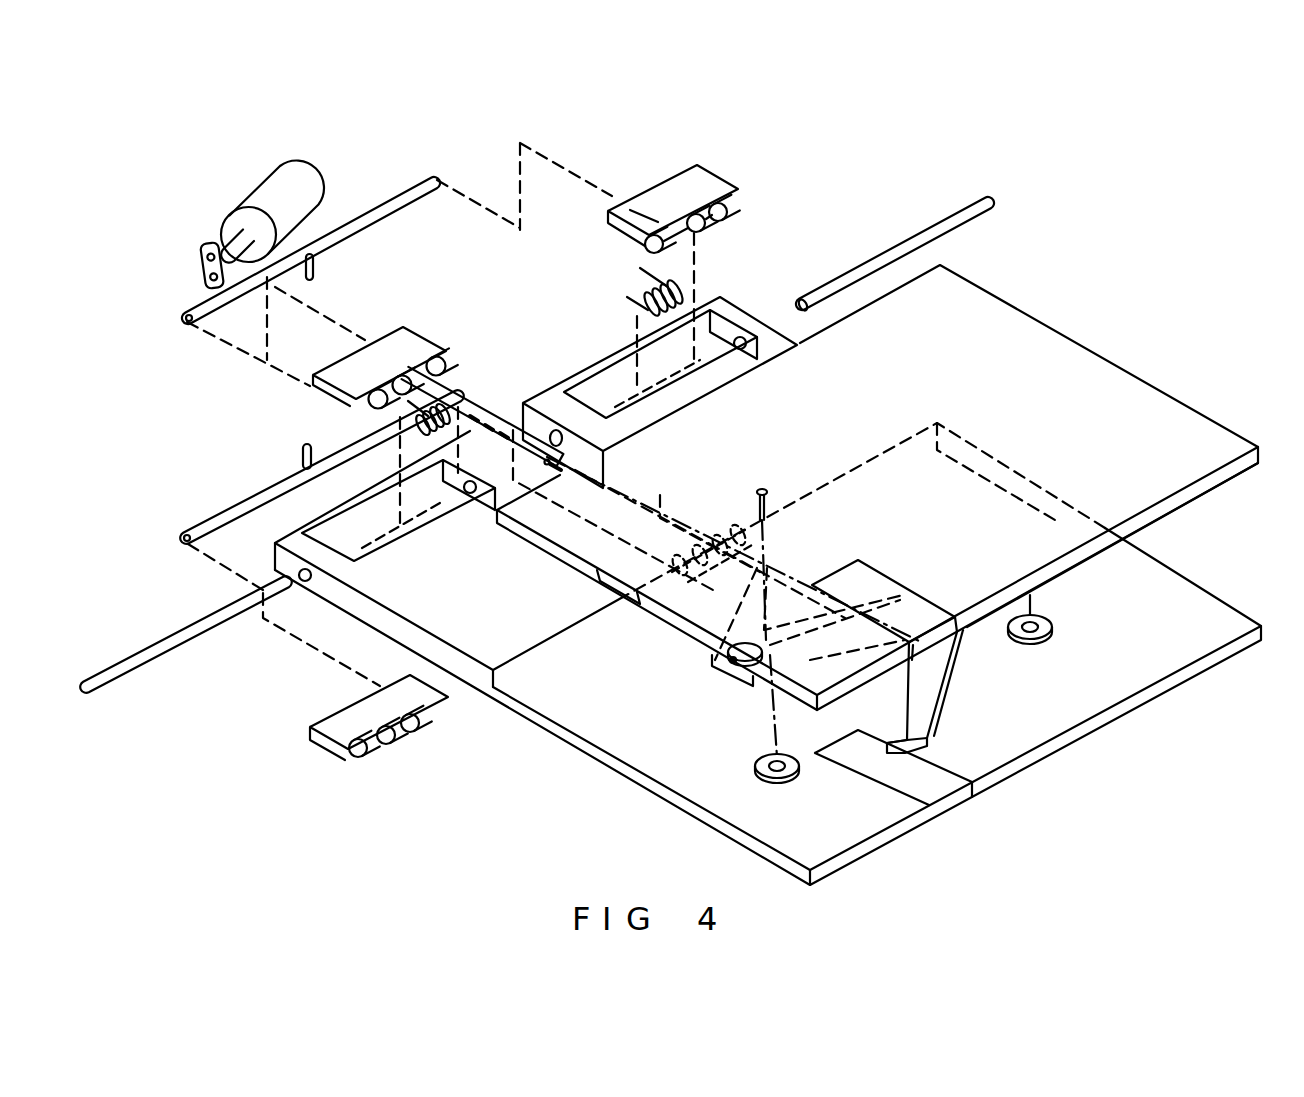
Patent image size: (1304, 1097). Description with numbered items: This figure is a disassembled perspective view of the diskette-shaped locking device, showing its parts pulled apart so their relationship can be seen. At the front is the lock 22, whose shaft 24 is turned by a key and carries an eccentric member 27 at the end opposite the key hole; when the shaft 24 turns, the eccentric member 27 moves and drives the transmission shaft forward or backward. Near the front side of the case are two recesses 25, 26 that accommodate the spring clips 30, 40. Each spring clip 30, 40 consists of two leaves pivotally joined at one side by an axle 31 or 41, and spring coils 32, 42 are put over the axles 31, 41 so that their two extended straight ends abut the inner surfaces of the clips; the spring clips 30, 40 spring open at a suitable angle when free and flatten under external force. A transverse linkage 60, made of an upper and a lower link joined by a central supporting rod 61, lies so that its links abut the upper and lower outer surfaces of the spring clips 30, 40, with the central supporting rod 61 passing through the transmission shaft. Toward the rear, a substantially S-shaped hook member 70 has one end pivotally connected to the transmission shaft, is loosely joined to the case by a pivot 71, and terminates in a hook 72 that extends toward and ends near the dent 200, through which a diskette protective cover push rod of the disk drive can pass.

The lock 22 is at (290, 188).
The shaft 24 is at (245, 235).
The eccentric member 27 is at (207, 260).
The transverse linkage 60 is at (373, 213).
The central supporting rod 61 is at (315, 268).
The spring clip 30 is at (685, 187).
The spring coil 32 is at (672, 290).
The axle 31 is at (923, 240).
The recess 25 is at (730, 333).
The hook member 70 is at (933, 617).
The spring clip 40 is at (312, 374).
The spring coil 42 is at (418, 418).
The recess 26 is at (273, 543).
The axle 41 is at (133, 670).
The hook 72 is at (857, 732).
The pivot 71 is at (725, 668).
The dent 200 is at (923, 795).